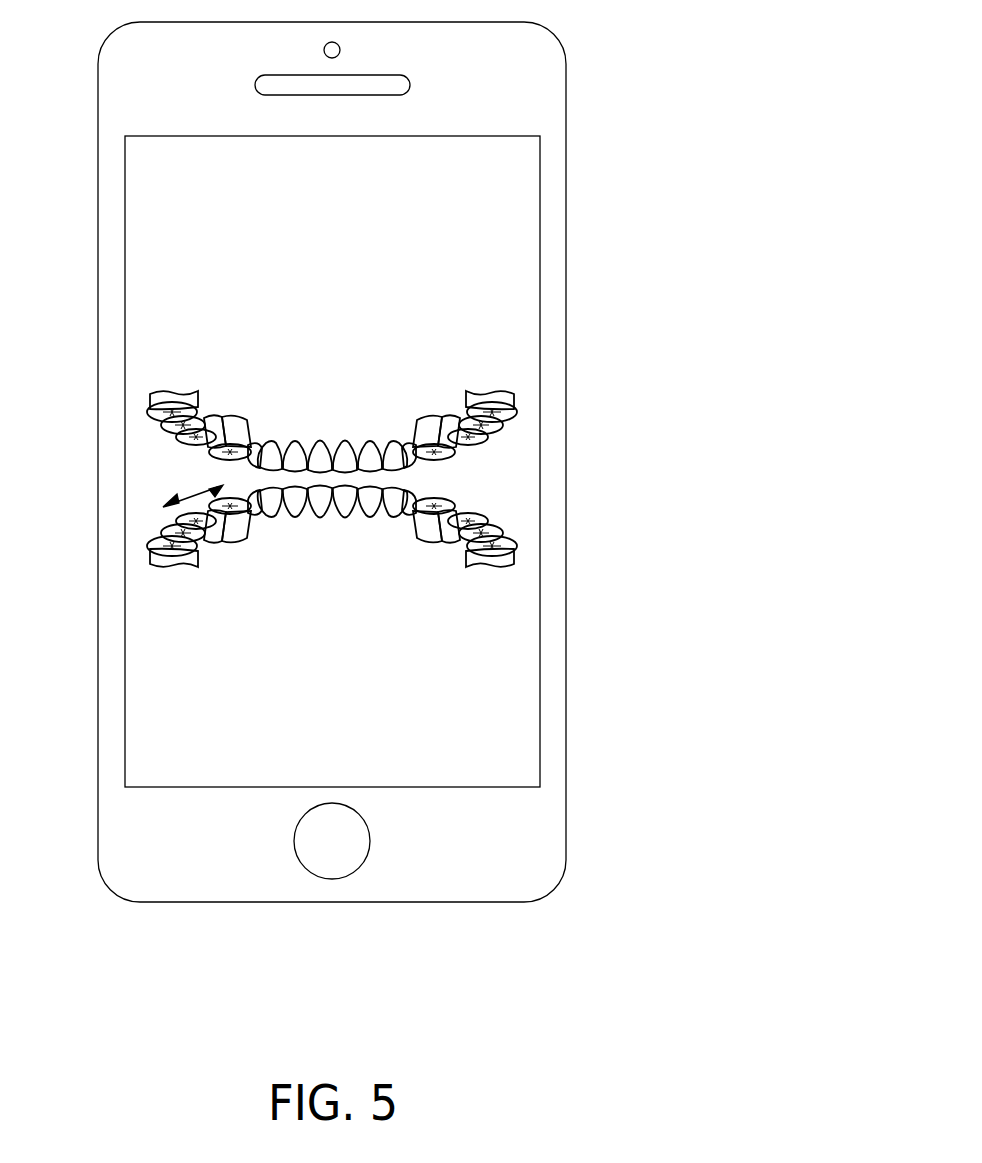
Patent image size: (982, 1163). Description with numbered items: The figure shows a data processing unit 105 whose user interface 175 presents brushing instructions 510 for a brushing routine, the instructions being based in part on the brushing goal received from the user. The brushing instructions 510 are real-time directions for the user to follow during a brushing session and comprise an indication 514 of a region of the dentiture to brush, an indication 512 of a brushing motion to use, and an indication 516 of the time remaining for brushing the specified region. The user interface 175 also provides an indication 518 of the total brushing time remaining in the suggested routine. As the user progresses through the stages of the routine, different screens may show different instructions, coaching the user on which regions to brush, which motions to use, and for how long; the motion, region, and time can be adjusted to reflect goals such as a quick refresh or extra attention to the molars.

The data processing unit 105 is at (555, 285).
The user interface 175 is at (514, 153).
The brushing instructions 510 is at (149, 503).
The indication of a brushing motion 512 is at (168, 496).
The indication of a region of the dentiture to brush 514 is at (166, 538).
The indication of a time remaining for brushing the specified region 516 is at (295, 627).
The indication of the total brushing time remaining 518 is at (295, 702).